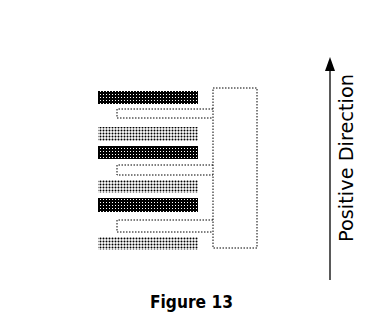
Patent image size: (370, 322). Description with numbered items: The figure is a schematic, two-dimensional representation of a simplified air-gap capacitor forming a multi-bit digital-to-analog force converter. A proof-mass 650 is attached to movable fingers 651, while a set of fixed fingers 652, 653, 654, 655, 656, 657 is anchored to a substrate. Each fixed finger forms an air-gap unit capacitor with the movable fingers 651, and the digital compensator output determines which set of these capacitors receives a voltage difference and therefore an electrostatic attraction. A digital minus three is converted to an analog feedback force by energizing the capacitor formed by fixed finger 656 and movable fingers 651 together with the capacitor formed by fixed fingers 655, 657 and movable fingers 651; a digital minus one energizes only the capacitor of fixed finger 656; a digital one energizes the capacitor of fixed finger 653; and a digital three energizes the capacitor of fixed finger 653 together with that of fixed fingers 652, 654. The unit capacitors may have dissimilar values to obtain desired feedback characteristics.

The proof-mass 650 is at (236, 88).
The movable fingers 651 is at (133, 119).
The fixed finger 652 is at (160, 92).
The fixed finger 653 is at (105, 158).
The fixed finger 654 is at (104, 212).
The fixed finger 655 is at (163, 244).
The fixed finger 656 is at (190, 185).
The fixed finger 657 is at (190, 132).